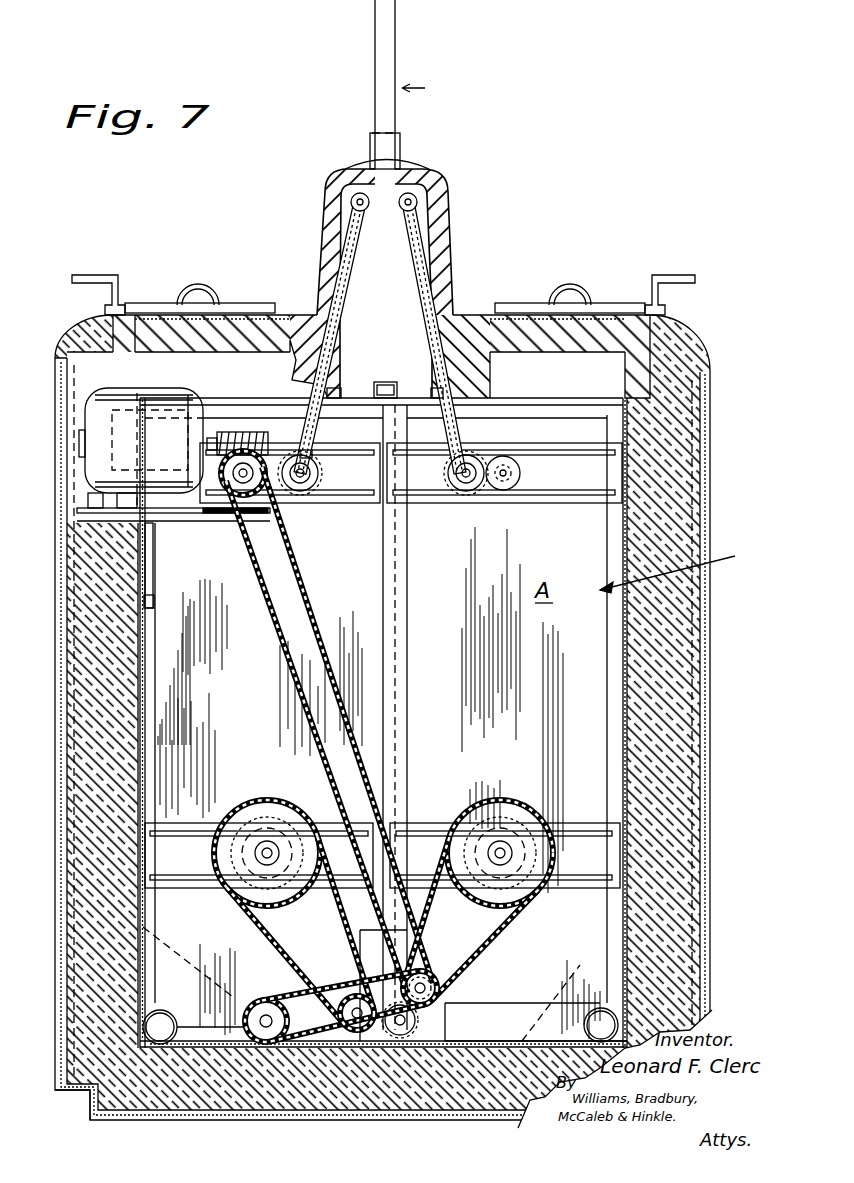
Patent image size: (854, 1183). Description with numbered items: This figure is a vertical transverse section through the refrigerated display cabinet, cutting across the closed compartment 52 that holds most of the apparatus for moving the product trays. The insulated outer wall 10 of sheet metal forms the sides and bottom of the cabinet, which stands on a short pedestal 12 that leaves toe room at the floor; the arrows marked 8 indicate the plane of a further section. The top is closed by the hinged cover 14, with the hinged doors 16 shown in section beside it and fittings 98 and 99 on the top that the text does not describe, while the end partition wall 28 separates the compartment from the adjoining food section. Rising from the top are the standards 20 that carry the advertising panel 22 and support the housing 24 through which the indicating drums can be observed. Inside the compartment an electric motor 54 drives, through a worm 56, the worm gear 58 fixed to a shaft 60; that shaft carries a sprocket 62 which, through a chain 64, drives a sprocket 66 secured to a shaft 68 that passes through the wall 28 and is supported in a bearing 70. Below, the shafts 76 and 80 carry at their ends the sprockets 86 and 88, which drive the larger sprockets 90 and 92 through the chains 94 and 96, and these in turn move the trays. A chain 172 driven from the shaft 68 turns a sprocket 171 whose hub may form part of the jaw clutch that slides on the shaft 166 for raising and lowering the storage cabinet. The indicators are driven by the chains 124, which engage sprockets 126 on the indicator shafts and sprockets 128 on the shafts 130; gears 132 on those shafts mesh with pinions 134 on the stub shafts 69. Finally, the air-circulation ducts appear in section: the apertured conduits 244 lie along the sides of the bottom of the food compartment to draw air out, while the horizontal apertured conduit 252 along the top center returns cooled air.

The section line indicator 8 is at (538, 1144).
The outer wall 10 is at (55, 705).
The pedestal 12 is at (85, 1093).
The hinged cover 14 is at (468, 312).
The hinged doors 16 is at (245, 305).
The standards 20 is at (448, 225).
The panel 22 is at (395, 50).
The housing 24 is at (405, 165).
The end partition wall 28 is at (263, 732).
The closed compartment 52 is at (676, 563).
The electric motor 54 is at (125, 395).
The worm 56 is at (250, 432).
The worm gear 58 is at (262, 500).
The shaft 60 is at (217, 446).
The sprocket 62 is at (252, 484).
The chain 64 is at (300, 592).
The sprocket 66 is at (435, 985).
The shaft 68 is at (430, 952).
The stub shafts 69 is at (336, 398).
The bearing 70 is at (480, 1040).
The shaft 76 is at (430, 1006).
The shaft 80 is at (350, 990).
The sprocket 86 is at (415, 1032).
The sprocket 88 is at (350, 995).
The sprocket 90 is at (525, 830).
The sprocket 92 is at (245, 820).
The chain 94 is at (503, 850).
The chain 96 is at (270, 853).
The right handle 98 is at (697, 279).
The left handle 99 is at (112, 275).
The chains 124 is at (312, 306).
The sprockets 126 is at (351, 207).
The sprockets 128 is at (322, 474).
The shafts 130 is at (300, 497).
The gears 132 is at (305, 468).
The pinions 134 is at (304, 452).
The shaft 166 is at (245, 1010).
The sprocket 171 is at (225, 968).
The chain 172 is at (302, 1000).
The apertured conduits 244 is at (588, 1000).
The apertured conduit 252 is at (386, 382).